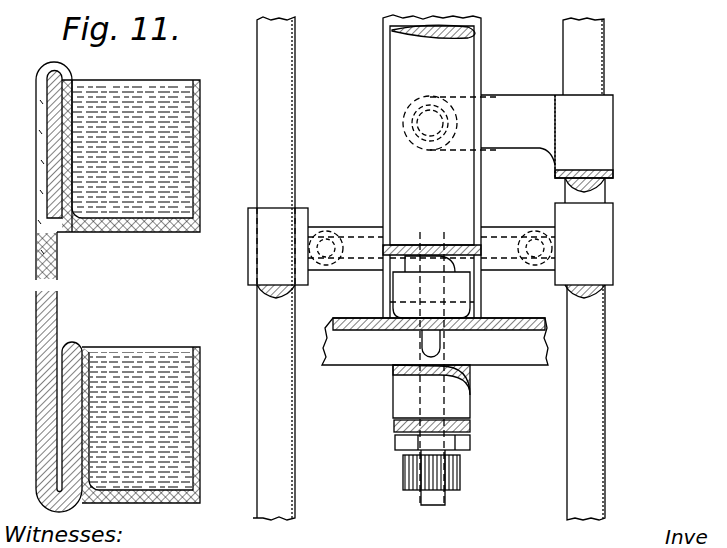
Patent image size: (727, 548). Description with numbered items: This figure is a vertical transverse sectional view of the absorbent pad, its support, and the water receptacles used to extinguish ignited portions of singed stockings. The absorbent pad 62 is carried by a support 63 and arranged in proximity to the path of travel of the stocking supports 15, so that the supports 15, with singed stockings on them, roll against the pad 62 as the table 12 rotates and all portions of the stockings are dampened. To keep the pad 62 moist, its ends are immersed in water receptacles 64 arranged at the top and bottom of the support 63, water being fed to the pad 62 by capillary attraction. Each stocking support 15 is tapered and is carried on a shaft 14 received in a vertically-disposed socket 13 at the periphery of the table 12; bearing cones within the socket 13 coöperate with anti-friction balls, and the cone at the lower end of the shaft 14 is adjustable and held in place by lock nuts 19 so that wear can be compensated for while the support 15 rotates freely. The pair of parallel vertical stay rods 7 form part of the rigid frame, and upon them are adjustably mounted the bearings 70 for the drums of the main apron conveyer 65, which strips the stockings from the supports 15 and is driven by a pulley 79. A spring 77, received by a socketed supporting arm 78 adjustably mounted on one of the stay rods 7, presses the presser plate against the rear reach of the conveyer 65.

The stay rod 7 is at (280, 472).
The table 12 is at (435, 368).
The socket 13 is at (468, 288).
The shaft 14 is at (424, 498).
The stocking support 15 is at (432, 166).
The lock nut 19 is at (470, 440).
The absorbent pad 62 is at (33, 283).
The support 63 is at (60, 283).
The water receptacle 64 is at (200, 152).
The main apron conveyer 65 is at (383, 22).
The bearing 70 is at (248, 250).
The spring 77 is at (436, 143).
The socketed supporting arm 78 is at (517, 148).
The pulley 79 is at (357, 234).